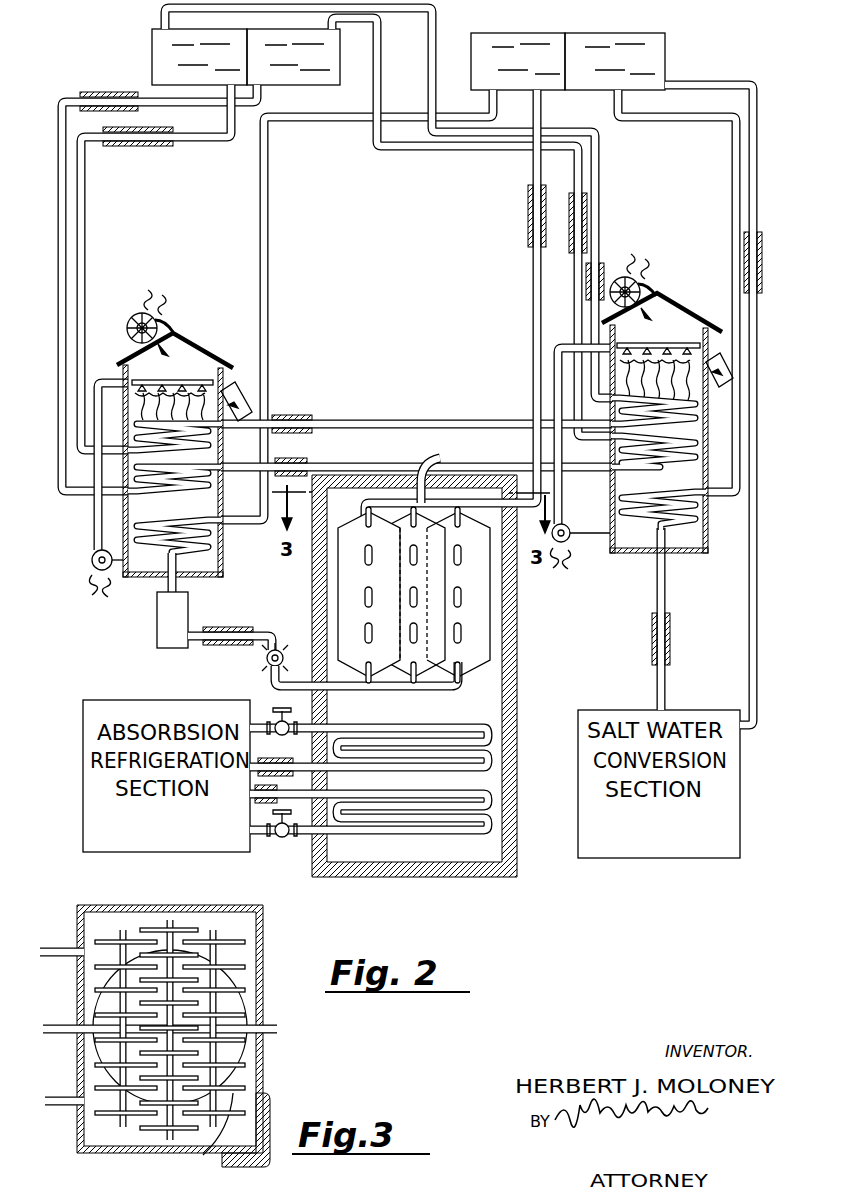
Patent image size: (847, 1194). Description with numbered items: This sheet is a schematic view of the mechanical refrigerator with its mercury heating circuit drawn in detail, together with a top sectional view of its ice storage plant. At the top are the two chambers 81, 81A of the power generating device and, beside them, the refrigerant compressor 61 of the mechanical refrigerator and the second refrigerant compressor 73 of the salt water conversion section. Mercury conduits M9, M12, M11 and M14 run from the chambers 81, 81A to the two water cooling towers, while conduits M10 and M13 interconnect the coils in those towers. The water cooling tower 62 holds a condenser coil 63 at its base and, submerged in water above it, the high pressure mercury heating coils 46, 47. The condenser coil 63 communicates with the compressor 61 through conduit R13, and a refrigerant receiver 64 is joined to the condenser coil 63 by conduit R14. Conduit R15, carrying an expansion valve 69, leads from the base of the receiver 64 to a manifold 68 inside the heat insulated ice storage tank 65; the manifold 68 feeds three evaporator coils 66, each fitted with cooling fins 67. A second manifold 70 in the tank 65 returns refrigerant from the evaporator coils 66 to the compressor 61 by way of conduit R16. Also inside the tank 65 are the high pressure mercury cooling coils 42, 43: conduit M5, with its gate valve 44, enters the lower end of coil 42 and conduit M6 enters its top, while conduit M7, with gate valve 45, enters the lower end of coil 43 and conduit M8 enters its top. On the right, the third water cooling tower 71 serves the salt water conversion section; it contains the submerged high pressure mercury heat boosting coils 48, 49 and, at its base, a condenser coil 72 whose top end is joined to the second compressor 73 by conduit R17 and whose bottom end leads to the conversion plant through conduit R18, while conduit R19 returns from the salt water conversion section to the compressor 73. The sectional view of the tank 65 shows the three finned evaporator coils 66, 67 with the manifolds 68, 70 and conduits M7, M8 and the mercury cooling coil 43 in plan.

In FIG. 2, the chamber of the power generating device 81 is at (180, 28).
In FIG. 2, the chamber of the power generating device 81A is at (255, 28).
In FIG. 2, the refrigerant compressor 61 is at (482, 34).
In FIG. 2, the second refrigerant compressor 73 is at (580, 34).
In FIG. 2, the conduit M11 is at (427, 64).
In FIG. 2, the conduit M14 is at (378, 82).
In FIG. 2, the conduit R13 is at (485, 112).
In FIG. 2, the conduit R19 is at (716, 58).
In FIG. 2, the conduit R16 is at (539, 124).
In FIG. 2, the conduit R17 is at (733, 200).
In FIG. 2, the conduit M12 is at (65, 290).
In FIG. 2, the conduit M9 is at (80, 370).
In FIG. 2, the conduit M10 is at (361, 430).
In FIG. 2, the conduit M13 is at (362, 462).
In FIG. 2, the water cooling tower 62 is at (178, 342).
In FIG. 2, the third water cooling tower 71 is at (674, 300).
In FIG. 2, the high pressure mercury heating coil 47 is at (218, 446).
In FIG. 2, the high pressure mercury heating coil 46 is at (196, 494).
In FIG. 2, the condenser coil 63 is at (164, 527).
In FIG. 2, the high pressure mercury heat boosting coil 49 is at (698, 442).
In FIG. 2, the high pressure mercury heat boosting coil 48 is at (703, 486).
In FIG. 2, the condenser coil 72 is at (704, 535).
In FIG. 2, the conduit R14 is at (176, 590).
In FIG. 2, the refrigerant receiver 64 is at (157, 636).
In FIG. 2, the conduit R15 is at (230, 650).
In FIG. 2, the expansion valve 69 is at (280, 644).
In FIG. 2, the conduit R18 is at (660, 602).
In FIG. 2, the ice storage tank 65 is at (514, 666).
In FIG. 3, the ice storage tank 65 is at (76, 1136).
In FIG. 2, the evaporator coil 66 is at (416, 602).
In FIG. 3, the evaporator coil 66 is at (160, 927).
In FIG. 2, the cooling fins 67 is at (353, 530).
In FIG. 3, the cooling fins 67 is at (90, 943).
In FIG. 2, the manifold 68 is at (440, 692).
In FIG. 3, the manifold 68 is at (60, 1024).
In FIG. 2, the second manifold 70 is at (442, 474).
In FIG. 3, the second manifold 70 is at (260, 1029).
In FIG. 2, the conduit M8 is at (258, 714).
In FIG. 3, the conduit M8 is at (55, 954).
In FIG. 2, the gate valve 45 is at (303, 718).
In FIG. 2, the conduit M7 is at (289, 760).
In FIG. 3, the conduit M7 is at (57, 1099).
In FIG. 2, the conduit M6 is at (304, 793).
In FIG. 2, the high pressure mercury cooling coil 43 is at (413, 762).
In FIG. 3, the high pressure mercury cooling coil 43 is at (236, 1053).
In FIG. 2, the conduit M5 is at (252, 838).
In FIG. 2, the gate valve 44 is at (283, 841).
In FIG. 2, the high pressure mercury cooling coil 42 is at (413, 827).